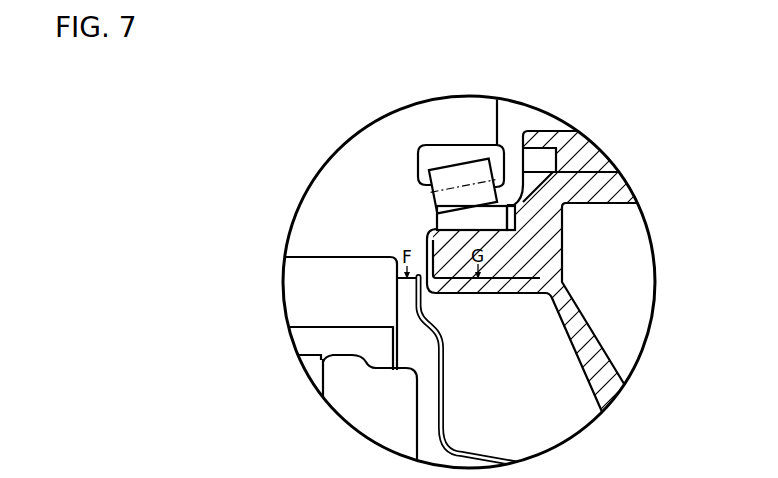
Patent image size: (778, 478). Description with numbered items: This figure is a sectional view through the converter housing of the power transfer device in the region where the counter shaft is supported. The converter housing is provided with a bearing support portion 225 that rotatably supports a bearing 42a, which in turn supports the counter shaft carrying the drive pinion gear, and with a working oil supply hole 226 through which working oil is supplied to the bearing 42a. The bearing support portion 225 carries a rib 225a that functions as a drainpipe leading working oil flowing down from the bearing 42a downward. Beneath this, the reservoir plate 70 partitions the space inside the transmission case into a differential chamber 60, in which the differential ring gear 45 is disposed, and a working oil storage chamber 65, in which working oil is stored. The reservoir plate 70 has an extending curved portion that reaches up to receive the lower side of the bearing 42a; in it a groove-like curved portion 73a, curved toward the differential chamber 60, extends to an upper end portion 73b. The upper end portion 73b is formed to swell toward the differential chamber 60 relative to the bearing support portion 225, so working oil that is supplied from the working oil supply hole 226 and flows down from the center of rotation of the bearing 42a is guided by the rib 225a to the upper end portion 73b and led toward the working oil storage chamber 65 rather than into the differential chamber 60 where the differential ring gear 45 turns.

The bearing 42a is at (478, 168).
The differential ring gear 45 is at (312, 257).
The differential chamber 60 is at (432, 368).
The working oil storage chamber 65 is at (564, 432).
The reservoir plate 70 is at (455, 412).
The groove-like curved portion 73a is at (424, 296).
The upper end portion 73b is at (424, 243).
The bearing support portion 225 is at (437, 237).
The rib 225a is at (427, 243).
The working oil supply hole 226 is at (574, 163).